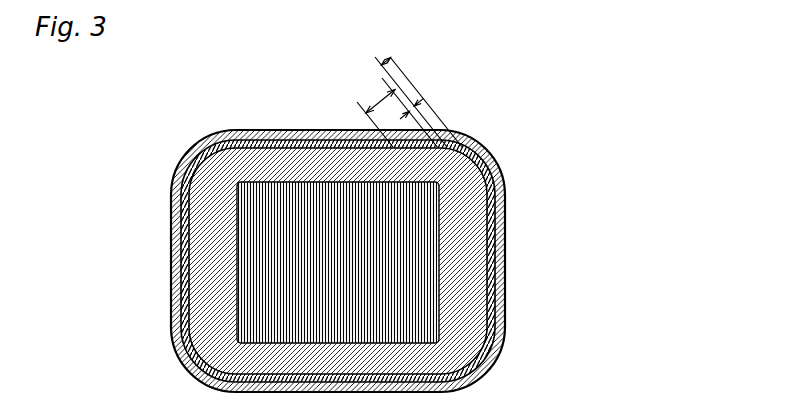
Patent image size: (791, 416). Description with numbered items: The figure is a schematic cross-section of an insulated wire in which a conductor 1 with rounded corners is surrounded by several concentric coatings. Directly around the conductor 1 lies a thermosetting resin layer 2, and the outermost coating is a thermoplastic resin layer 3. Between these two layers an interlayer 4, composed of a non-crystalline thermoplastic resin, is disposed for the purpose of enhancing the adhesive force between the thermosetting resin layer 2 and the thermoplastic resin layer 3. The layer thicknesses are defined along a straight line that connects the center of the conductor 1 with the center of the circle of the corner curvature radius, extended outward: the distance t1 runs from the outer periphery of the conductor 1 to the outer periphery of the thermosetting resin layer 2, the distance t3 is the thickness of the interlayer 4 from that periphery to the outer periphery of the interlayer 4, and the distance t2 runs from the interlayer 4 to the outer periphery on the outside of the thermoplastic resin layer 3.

The conductor 1 is at (383, 320).
The thermosetting resin layer 2 is at (473, 293).
The thermoplastic resin layer 3 is at (503, 193).
The interlayer 4 is at (500, 247).
The thickness of the thermosetting resin layer t1 is at (397, 112).
The thickness of the thermoplastic resin layer t2 is at (391, 65).
The thickness of the interlayer t3 is at (423, 100).